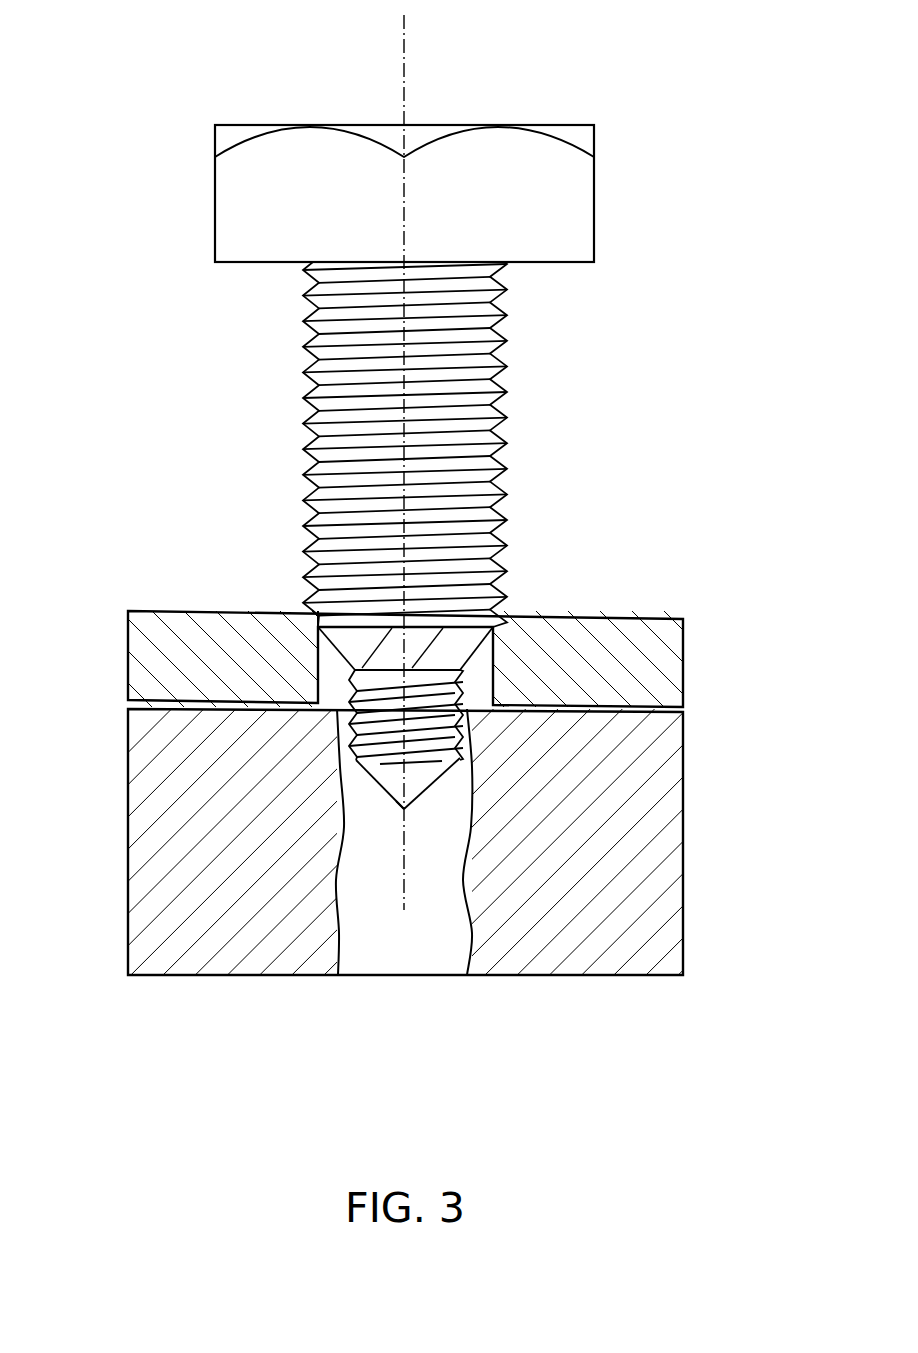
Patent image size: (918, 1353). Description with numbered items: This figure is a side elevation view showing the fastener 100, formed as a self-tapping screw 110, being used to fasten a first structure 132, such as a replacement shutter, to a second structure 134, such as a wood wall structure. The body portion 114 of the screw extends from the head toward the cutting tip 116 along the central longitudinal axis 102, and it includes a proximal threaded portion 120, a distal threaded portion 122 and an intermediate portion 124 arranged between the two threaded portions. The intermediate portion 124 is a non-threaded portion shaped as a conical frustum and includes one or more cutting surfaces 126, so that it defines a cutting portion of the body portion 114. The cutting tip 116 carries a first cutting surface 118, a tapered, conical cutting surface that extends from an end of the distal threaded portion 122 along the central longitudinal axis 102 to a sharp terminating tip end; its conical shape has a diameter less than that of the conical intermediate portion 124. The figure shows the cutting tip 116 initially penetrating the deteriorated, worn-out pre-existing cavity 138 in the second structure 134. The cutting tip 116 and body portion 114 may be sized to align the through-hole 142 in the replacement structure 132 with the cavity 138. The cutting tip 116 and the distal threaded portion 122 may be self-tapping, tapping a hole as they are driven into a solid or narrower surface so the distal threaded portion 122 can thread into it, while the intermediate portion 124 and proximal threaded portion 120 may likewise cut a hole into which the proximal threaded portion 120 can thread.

The fastener 100 is at (228, 96).
The central longitudinal axis 102 is at (405, 55).
The self-tapping screw 110 is at (196, 194).
The body portion 114 is at (280, 466).
The cutting tip 116 is at (394, 818).
The first cutting surface 118 is at (432, 780).
The proximal threaded portion 120 is at (506, 412).
The distal threaded portion 122 is at (317, 622).
The intermediate portion 124 is at (462, 662).
The cutting surfaces 126 is at (470, 650).
The first structure 132 is at (660, 691).
The second structure 134 is at (670, 738).
The cavity 138 is at (424, 945).
The through-hole 142 is at (316, 690).